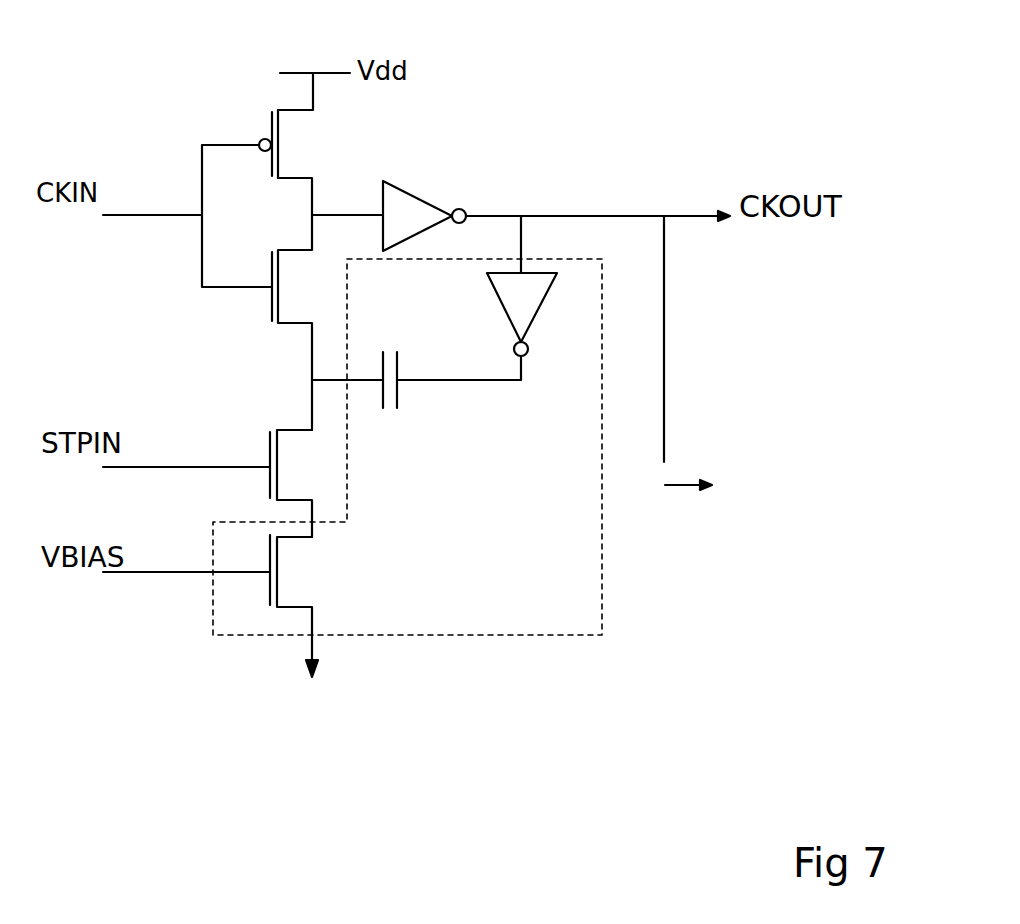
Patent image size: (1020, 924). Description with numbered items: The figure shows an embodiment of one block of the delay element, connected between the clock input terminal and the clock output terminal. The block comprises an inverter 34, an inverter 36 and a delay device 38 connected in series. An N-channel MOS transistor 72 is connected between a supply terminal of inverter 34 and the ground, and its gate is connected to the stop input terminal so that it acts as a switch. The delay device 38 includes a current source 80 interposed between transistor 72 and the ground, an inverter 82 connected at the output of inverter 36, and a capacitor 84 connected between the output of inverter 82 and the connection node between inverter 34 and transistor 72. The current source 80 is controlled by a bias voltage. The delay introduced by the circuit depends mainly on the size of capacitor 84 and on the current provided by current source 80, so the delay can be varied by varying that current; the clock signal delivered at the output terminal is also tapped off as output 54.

The inverter 34 is at (189, 150).
The inverter 36 is at (428, 188).
The delay device 38 is at (568, 592).
The clock output signal 54 is at (710, 361).
The N-channel MOS transistor 72 is at (268, 450).
The current source 80 is at (290, 570).
The inverter 82 is at (552, 302).
The capacitor 84 is at (403, 400).